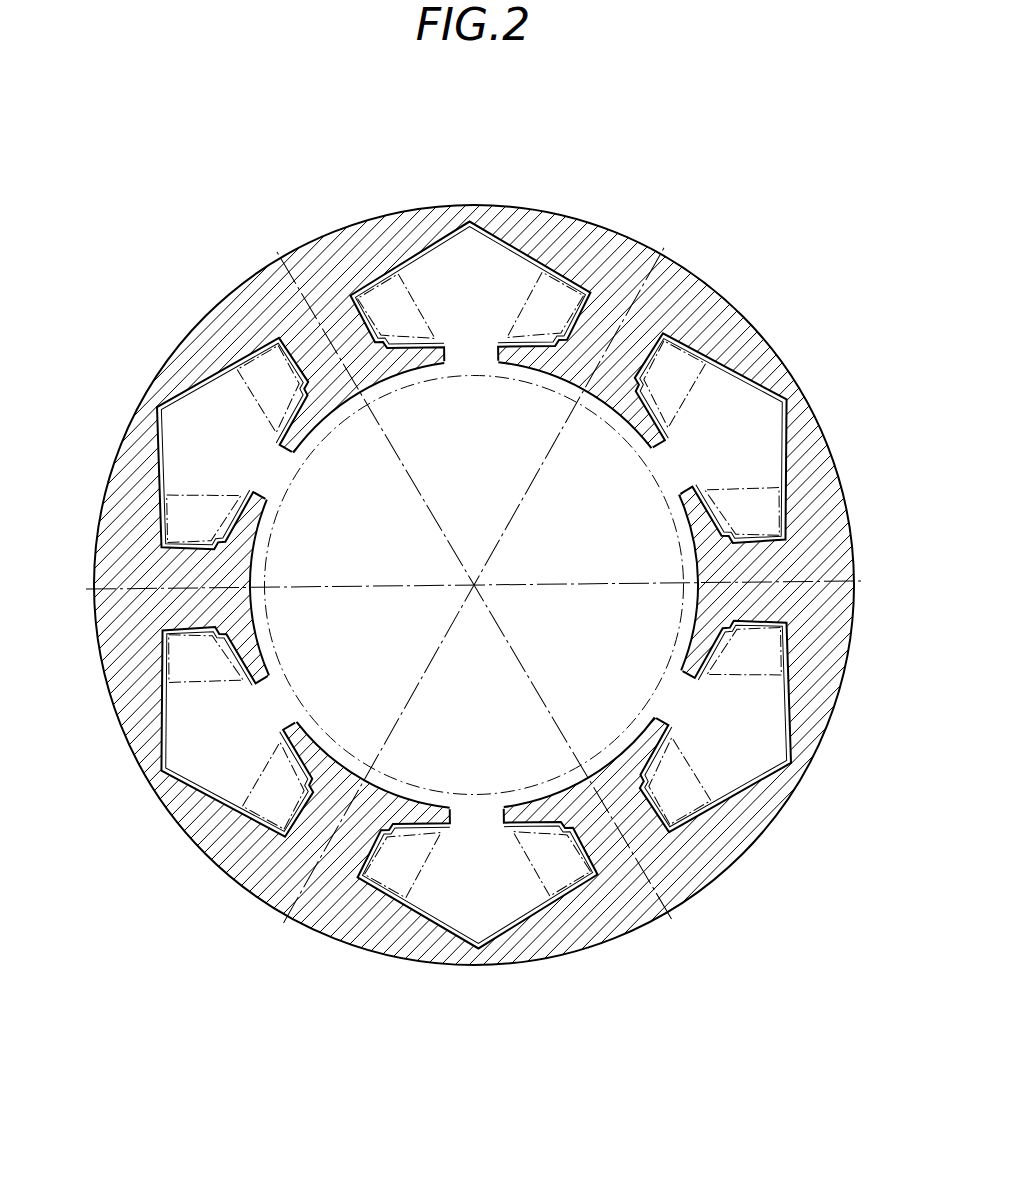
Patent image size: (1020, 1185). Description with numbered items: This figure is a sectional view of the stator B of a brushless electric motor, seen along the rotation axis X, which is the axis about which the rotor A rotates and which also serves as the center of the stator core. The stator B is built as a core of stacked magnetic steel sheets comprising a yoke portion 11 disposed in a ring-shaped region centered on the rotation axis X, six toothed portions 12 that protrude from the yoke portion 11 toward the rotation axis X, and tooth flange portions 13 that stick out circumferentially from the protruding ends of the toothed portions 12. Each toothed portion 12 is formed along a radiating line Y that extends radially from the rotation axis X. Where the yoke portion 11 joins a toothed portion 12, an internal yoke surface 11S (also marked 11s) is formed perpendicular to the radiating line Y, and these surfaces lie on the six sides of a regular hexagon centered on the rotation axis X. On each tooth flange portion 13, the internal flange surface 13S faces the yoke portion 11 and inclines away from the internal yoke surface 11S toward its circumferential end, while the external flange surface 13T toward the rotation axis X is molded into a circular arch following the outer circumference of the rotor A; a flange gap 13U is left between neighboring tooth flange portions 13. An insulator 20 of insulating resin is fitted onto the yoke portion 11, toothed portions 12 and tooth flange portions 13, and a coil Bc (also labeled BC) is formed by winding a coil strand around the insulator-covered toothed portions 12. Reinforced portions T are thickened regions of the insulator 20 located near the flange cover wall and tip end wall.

The yoke portion 11 is at (572, 238).
The internal yoke surface 11S is at (163, 392).
The internal yoke surface 11s is at (418, 262).
The toothed portion 12 is at (440, 335).
The tooth flange portion 13 is at (318, 438).
The internal flange surface 13S is at (415, 370).
The external flange surface 13T is at (305, 440).
The flange gap 13U is at (262, 460).
The insulator 20 is at (443, 246).
The rotor A is at (270, 470).
The stator B is at (694, 176).
The coil Bc is at (490, 250).
The coil BC is at (560, 940).
The reinforced portion T is at (474, 585).
The rotation axis X is at (494, 590).
The radiating line Y is at (272, 248).